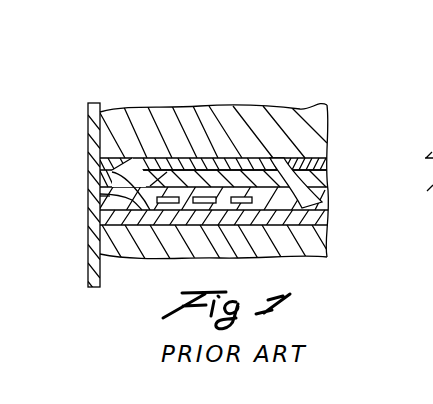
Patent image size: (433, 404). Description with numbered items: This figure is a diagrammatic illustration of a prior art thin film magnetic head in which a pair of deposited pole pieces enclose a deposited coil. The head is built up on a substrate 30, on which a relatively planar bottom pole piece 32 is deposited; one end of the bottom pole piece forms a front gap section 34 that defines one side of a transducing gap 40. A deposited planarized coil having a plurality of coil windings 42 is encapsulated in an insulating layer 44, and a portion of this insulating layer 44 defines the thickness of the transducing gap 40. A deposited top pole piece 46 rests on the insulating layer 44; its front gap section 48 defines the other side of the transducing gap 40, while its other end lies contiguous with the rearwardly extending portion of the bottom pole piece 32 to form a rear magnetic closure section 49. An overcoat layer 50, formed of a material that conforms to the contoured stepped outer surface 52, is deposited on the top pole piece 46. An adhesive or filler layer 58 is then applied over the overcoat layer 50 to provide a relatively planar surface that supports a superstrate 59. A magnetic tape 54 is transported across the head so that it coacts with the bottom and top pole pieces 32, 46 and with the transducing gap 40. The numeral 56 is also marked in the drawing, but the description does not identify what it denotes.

The substrate 30 is at (300, 243).
The bottom pole piece 32 is at (322, 222).
The front gap section 34 is at (113, 218).
The transducing gap 40 is at (100, 208).
The coil windings 42 is at (329, 110).
The insulating layer 44 is at (137, 188).
The top pole piece 46 is at (128, 180).
The front gap section 48 is at (105, 197).
The rear magnetic closure section 49 is at (322, 206).
The overcoat layer 50 is at (268, 162).
The contoured stepped outer surface 52 is at (208, 178).
The tape 54 is at (100, 182).
The channel 56 is at (322, 188).
The adhesive or filler layer 58 is at (318, 168).
The superstrate 59 is at (255, 125).